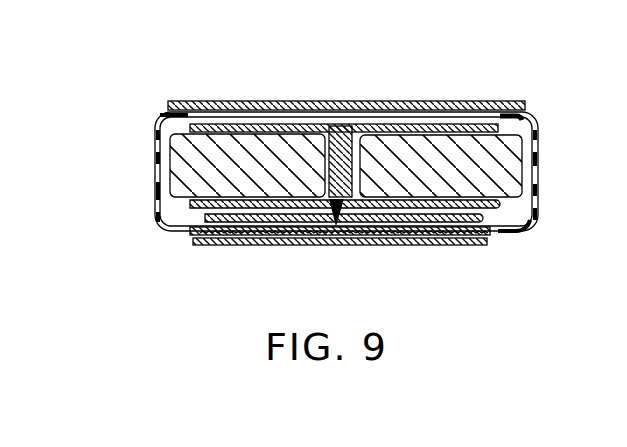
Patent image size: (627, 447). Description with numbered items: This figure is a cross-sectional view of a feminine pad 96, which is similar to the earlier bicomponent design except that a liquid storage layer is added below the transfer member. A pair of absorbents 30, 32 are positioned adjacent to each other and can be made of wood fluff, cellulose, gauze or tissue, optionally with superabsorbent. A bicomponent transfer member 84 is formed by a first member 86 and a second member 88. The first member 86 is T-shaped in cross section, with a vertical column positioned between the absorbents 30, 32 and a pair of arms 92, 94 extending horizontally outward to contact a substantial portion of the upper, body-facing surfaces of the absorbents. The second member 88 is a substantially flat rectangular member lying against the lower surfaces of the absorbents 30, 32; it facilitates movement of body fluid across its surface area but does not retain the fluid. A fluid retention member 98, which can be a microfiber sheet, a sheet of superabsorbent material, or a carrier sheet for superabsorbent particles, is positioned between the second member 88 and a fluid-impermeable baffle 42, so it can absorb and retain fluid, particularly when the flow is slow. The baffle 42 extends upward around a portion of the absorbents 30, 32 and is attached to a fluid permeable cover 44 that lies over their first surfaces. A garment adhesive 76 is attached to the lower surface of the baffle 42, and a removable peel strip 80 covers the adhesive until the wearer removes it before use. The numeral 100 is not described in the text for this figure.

In FIG. 9, the feminine pad 96 is at (226, 64).
In FIG. 9, the arm 92 is at (225, 124).
In FIG. 9, the absorbent 30 is at (263, 140).
In FIG. 9, the first member 86 is at (340, 127).
In FIG. 9, the arm 94 is at (440, 110).
In FIG. 9, the fluid permeable cover 44 is at (488, 104).
In FIG. 9, the absorbent 32 is at (500, 157).
In FIG. 9, the second member 88 is at (532, 210).
In FIG. 9, the fluid retention member 98 is at (500, 237).
In FIG. 9, the garment adhesive 76 is at (453, 246).
In FIG. 9, the removable peel strip 80 is at (370, 247).
In FIG. 9, the bicomponent transfer member 84 is at (338, 205).
In FIG. 9, the fluid-impermeable baffle 42 is at (180, 234).
In FIG. 10, the assembly of FIG. 10 100 is at (166, 442).